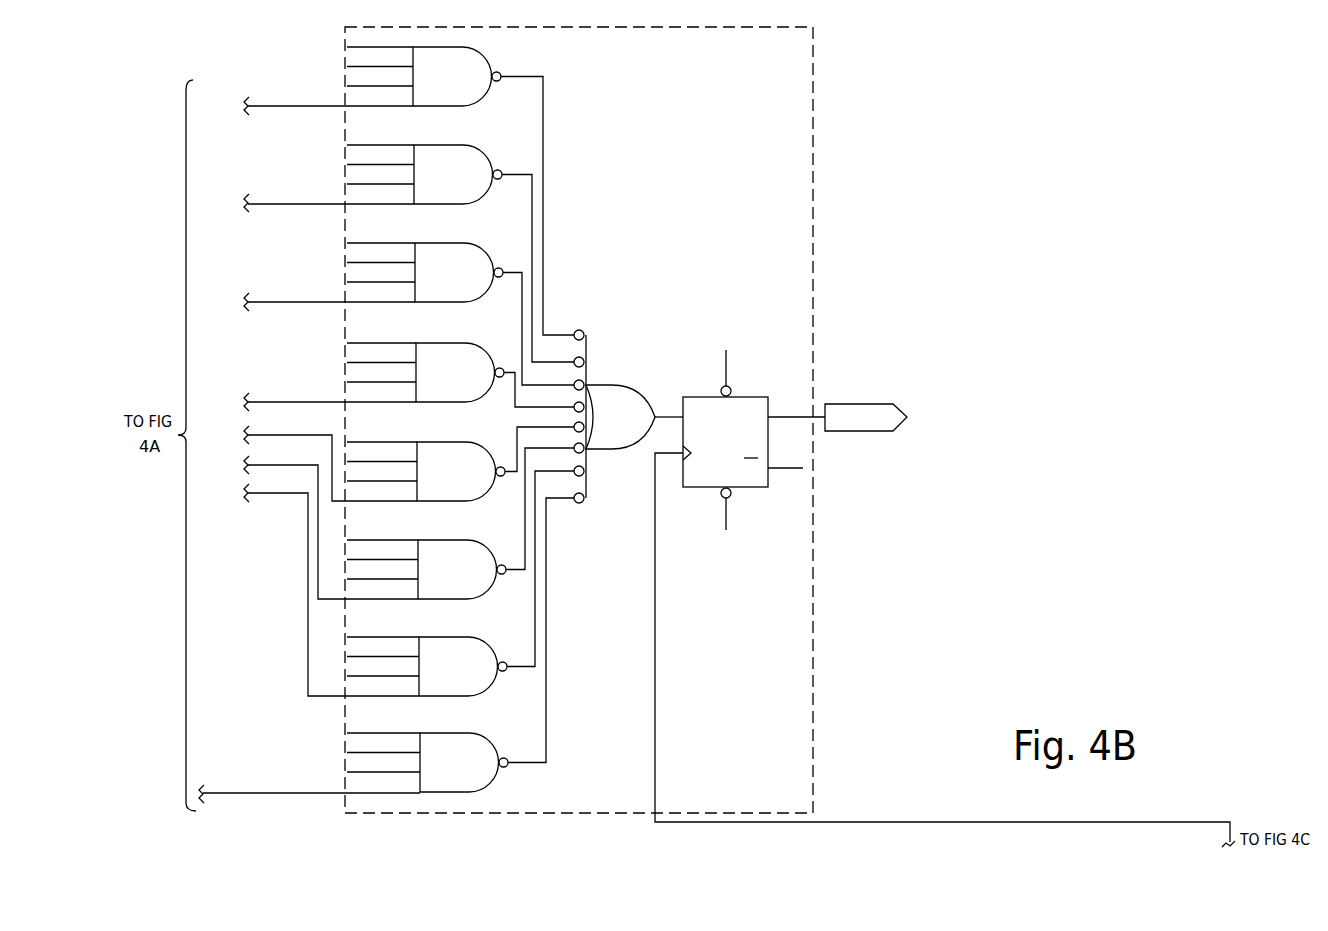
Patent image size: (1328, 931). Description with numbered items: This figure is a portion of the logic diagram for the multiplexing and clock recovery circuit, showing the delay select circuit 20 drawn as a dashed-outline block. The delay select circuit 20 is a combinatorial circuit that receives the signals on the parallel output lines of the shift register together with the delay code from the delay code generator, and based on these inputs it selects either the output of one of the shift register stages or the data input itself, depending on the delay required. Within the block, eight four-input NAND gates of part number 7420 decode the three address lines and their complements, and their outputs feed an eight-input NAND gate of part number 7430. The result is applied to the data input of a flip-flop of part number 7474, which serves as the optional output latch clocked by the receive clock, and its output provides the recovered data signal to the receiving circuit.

The delay select circuit 20 is at (340, 34).
The dual 4-input NAND gate 7420 is at (388, 422).
The 8-input NAND gate 7430 is at (617, 415).
The D-type flip-flop 7474 is at (945, 598).